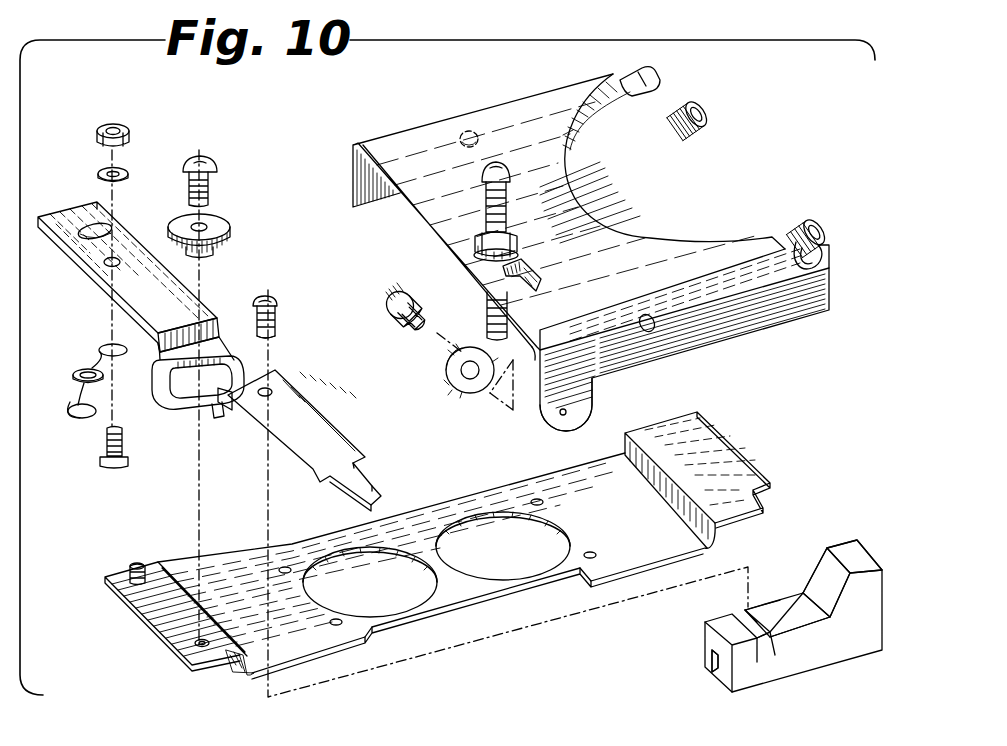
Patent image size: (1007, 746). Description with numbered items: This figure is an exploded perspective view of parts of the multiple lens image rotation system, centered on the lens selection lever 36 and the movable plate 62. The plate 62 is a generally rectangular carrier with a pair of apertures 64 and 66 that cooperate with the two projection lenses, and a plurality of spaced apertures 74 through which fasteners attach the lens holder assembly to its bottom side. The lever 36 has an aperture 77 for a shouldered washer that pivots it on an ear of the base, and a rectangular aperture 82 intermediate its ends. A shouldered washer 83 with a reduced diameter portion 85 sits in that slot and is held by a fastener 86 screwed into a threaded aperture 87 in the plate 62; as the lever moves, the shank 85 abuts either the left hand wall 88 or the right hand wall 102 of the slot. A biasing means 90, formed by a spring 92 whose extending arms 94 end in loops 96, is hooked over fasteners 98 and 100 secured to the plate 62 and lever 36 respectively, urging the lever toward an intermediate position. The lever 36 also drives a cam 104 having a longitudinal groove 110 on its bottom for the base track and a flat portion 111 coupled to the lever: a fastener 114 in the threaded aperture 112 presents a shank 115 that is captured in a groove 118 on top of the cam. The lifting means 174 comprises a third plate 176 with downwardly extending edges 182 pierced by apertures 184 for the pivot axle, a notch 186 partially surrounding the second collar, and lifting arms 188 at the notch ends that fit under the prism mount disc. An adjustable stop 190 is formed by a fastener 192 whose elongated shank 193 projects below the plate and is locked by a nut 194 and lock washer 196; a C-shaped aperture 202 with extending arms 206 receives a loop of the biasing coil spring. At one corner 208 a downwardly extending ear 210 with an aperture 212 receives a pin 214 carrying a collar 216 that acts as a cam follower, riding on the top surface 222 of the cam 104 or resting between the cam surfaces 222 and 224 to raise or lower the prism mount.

The lens selection lever 36 is at (308, 440).
The movable plate 62 is at (444, 548).
The aperture 64 is at (540, 575).
The aperture 66 is at (410, 602).
The apertures 74 is at (286, 566).
The aperture 77 is at (98, 210).
The rectangular aperture 82 is at (219, 345).
The shouldered washer 83 is at (225, 226).
The reduced diameter portion 85 is at (214, 252).
The fastener 86 is at (210, 162).
The threaded aperture 87 is at (195, 648).
The left hand wall 88 is at (166, 400).
The biasing means 90 is at (77, 383).
The spring 92 is at (74, 378).
The extending arms 94 is at (96, 352).
The loops 96 is at (112, 344).
The fastener 98 is at (138, 560).
The fastener 100 is at (124, 448).
The right hand wall 102 is at (240, 366).
The cam 104 is at (796, 608).
The longitudinal groove 110 is at (710, 668).
The flat portion 111 is at (784, 614).
The threaded aperture 112 is at (270, 392).
The fastener 114 is at (276, 300).
The shank 115 is at (278, 323).
The groove 118 is at (745, 616).
The lifting means 174 is at (756, 168).
The third plate 176 is at (593, 256).
The downwardly extending edges 182 is at (350, 175).
The apertures 184 is at (464, 130).
The notch 186 is at (648, 230).
The lifting arms 188 is at (660, 80).
The adjustable stop 190 is at (464, 212).
The fastener 192 is at (566, 160).
The elongated shank 193 is at (472, 240).
The nut 194 is at (490, 252).
The lock washer 196 is at (488, 268).
The C-shaped aperture 202 is at (524, 266).
The extending arms 206 is at (540, 281).
The corner 208 is at (520, 408).
The downwardly extending ear 210 is at (594, 420).
The aperture 212 is at (564, 416).
The pin 214 is at (387, 318).
The collar 216 is at (708, 118).
The top surface 222 is at (855, 550).
The cam surface 224 is at (805, 630).